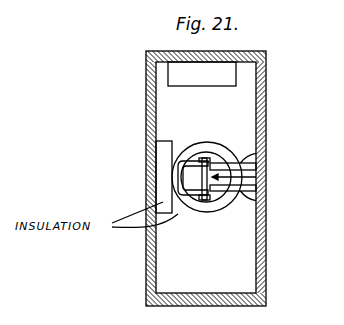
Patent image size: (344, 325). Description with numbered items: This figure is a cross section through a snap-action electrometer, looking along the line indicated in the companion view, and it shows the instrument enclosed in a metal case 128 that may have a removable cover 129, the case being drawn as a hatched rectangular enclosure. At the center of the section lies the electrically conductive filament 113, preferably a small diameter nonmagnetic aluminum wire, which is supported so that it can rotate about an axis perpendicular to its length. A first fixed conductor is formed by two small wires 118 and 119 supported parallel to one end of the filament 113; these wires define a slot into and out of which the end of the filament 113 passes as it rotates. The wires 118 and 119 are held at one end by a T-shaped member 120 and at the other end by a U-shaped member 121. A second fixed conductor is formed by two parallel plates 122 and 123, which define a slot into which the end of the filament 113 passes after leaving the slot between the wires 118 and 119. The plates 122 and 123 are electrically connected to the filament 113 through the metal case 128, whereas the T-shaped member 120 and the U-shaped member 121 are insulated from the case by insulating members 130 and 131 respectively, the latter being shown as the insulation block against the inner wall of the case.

The filament 113 is at (257, 177).
The wire 118 is at (212, 163).
The wire 119 is at (220, 198).
The T-shaped member 120 is at (178, 180).
The U-shaped member 121 is at (190, 197).
The plate 122 is at (257, 158).
The plate 123 is at (257, 200).
The metal case 128 is at (249, 53).
The removable cover 129 is at (262, 101).
The insulating member 130 is at (197, 142).
The insulating member 131 is at (165, 152).